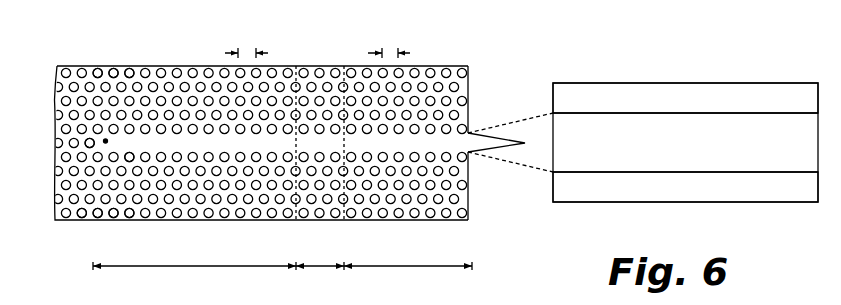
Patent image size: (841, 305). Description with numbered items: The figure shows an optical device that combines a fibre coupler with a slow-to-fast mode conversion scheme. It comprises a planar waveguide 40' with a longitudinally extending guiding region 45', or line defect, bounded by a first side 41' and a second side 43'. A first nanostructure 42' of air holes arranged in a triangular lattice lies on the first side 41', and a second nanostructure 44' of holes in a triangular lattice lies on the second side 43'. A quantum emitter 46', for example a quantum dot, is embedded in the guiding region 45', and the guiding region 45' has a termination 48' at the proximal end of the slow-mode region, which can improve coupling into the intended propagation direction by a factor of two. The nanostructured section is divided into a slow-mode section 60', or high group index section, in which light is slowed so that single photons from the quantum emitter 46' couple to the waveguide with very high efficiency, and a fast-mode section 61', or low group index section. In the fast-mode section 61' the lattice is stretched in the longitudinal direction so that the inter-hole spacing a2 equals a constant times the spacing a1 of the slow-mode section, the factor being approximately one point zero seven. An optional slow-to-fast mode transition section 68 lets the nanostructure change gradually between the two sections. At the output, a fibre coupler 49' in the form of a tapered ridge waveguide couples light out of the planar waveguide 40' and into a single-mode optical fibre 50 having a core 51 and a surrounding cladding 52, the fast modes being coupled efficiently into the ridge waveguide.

The planar waveguide 40' is at (270, 119).
The first side 41' is at (259, 121).
The first nanostructure 42' is at (102, 50).
The second side 43' is at (153, 198).
The second nanostructure 44' is at (92, 233).
The guiding region 45' is at (477, 167).
The quantum emitter 46' is at (63, 122).
The termination 48' is at (53, 157).
The fibre coupler 49' is at (497, 143).
The optical fibre 50 is at (734, 79).
The core of optical fibre 51 is at (716, 156).
The cladding of optical fibre 52 is at (668, 111).
The slow-mode section 60' is at (194, 256).
The fast-mode section 61' is at (408, 255).
The slow-to-fast mode transition section 68 is at (320, 168).
The lattice constant a1 is at (258, 52).
The lattice constant a2 is at (400, 52).